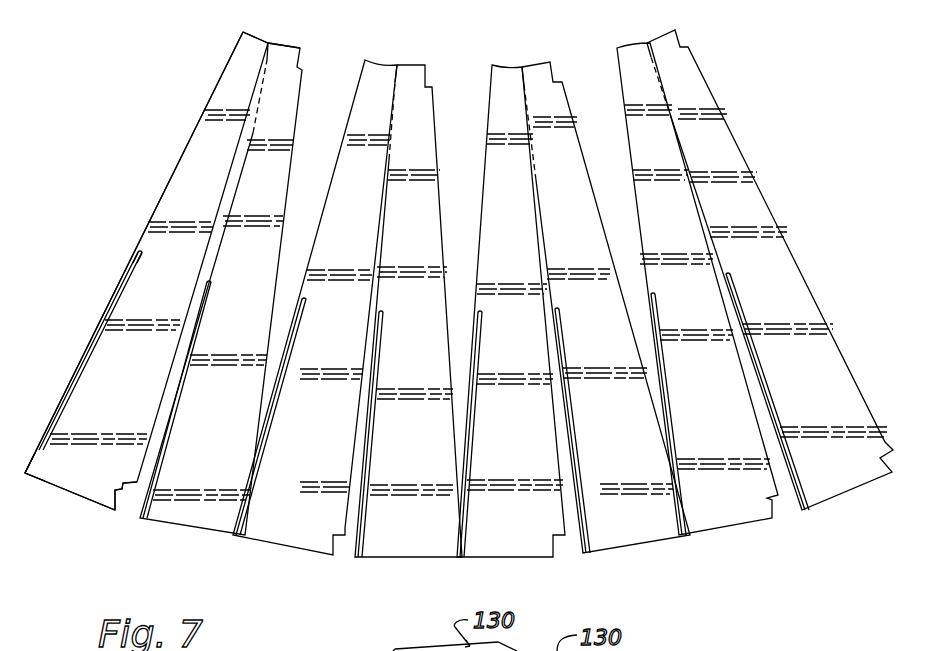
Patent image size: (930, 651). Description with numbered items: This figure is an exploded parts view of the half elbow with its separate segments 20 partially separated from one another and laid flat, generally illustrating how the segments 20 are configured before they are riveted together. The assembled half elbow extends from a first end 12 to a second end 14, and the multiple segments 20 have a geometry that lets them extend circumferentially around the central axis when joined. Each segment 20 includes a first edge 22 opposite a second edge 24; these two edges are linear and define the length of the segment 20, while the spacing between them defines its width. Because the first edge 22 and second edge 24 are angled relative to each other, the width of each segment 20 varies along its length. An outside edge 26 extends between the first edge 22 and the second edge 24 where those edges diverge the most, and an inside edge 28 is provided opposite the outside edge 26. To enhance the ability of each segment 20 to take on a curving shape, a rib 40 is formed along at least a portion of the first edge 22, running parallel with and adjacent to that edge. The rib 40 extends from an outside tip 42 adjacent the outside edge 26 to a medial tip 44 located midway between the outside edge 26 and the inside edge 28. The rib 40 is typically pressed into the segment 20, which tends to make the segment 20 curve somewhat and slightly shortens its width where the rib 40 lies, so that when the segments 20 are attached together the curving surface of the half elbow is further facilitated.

The first end 12 is at (454, 300).
The second end 14 is at (177, 163).
The segment 20 is at (290, 95).
The first edge 22 is at (62, 400).
The second edge 24 is at (141, 484).
The outside edge 26 is at (70, 492).
The inside edge 28 is at (252, 32).
The rib 40 is at (113, 300).
The outside tip 42 is at (23, 475).
The medial tip 44 is at (138, 253).